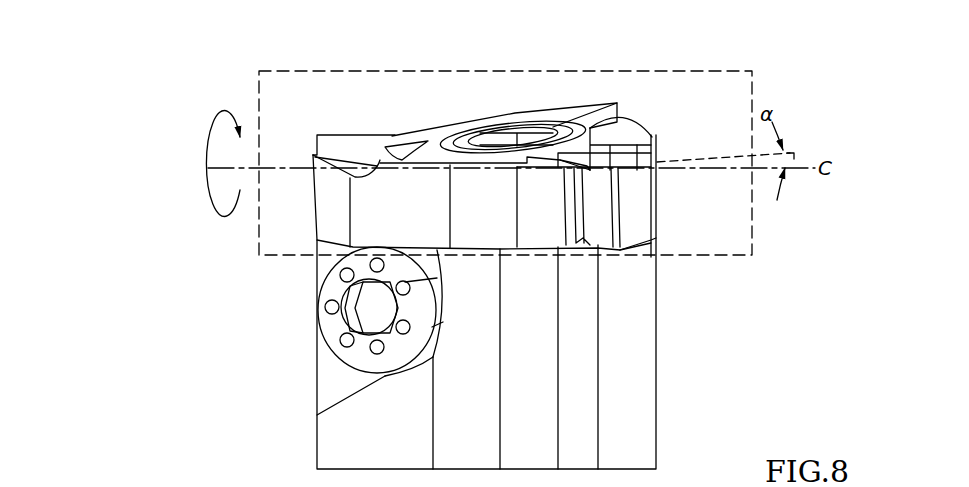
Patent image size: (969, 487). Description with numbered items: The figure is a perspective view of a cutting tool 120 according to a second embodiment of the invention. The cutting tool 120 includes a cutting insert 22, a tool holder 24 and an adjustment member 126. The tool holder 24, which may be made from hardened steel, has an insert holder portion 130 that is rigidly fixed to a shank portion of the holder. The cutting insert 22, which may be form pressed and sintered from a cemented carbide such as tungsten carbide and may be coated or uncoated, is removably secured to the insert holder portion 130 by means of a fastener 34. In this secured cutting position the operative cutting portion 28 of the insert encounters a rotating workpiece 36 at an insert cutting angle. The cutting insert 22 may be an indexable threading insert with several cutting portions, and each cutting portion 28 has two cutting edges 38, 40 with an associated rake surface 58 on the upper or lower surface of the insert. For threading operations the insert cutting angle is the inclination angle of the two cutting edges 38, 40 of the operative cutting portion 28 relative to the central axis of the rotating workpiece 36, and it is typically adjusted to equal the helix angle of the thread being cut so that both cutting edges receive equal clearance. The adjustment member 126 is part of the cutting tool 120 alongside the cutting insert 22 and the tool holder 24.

The cutting insert 22 is at (435, 133).
The fastener 34 is at (507, 135).
The cutting edge 38 is at (590, 160).
The cutting portion 28 is at (605, 158).
The rake surface 58 is at (612, 150).
The cutting edge 40 is at (635, 145).
The workpiece 36 is at (703, 225).
The insert holder portion 130 is at (613, 273).
The tool holder 24 is at (625, 352).
The cutting tool 120 is at (273, 287).
The adjustment member 126 is at (337, 330).